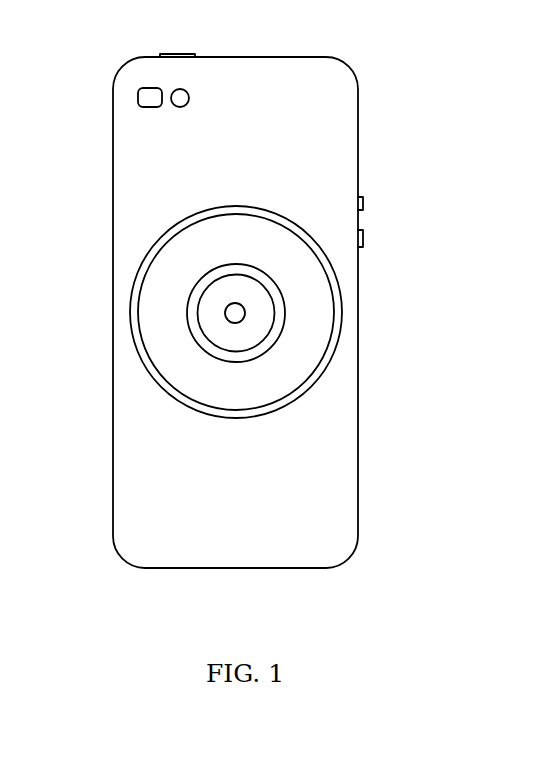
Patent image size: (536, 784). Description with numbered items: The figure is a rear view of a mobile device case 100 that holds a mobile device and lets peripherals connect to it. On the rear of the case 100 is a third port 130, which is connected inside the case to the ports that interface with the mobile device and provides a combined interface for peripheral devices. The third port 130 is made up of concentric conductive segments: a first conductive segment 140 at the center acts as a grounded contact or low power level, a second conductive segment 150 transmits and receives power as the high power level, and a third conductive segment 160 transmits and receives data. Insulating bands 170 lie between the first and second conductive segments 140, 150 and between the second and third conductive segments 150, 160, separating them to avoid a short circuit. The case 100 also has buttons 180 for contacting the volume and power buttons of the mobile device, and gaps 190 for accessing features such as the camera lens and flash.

The mobile device case 100 is at (371, 74).
The third port 130 is at (128, 295).
The first conductive segment 140 is at (225, 313).
The second conductive segment 150 is at (187, 324).
The third conductive segment 160 is at (139, 352).
The insulating bands 170 is at (232, 338).
The buttons 180 is at (161, 52).
The gaps 190 is at (166, 92).